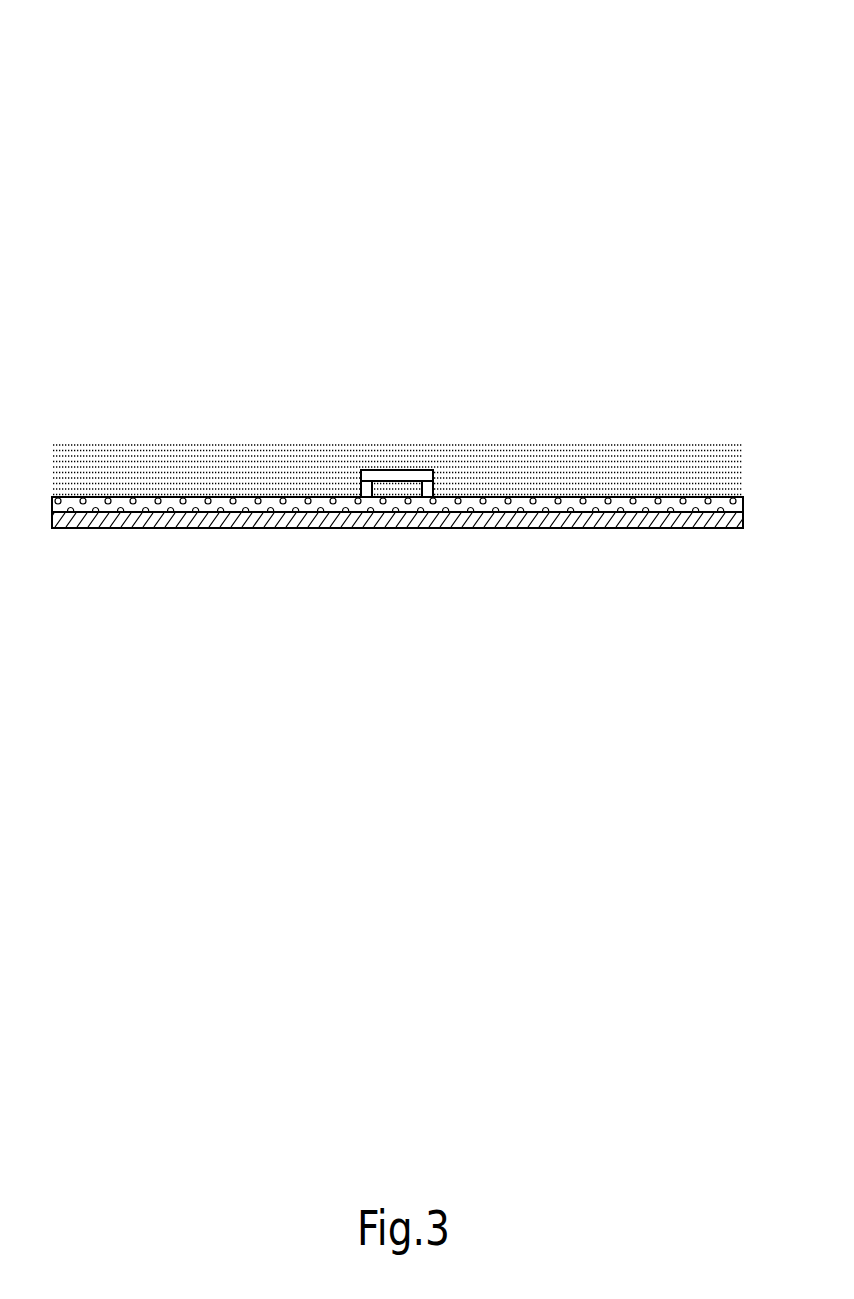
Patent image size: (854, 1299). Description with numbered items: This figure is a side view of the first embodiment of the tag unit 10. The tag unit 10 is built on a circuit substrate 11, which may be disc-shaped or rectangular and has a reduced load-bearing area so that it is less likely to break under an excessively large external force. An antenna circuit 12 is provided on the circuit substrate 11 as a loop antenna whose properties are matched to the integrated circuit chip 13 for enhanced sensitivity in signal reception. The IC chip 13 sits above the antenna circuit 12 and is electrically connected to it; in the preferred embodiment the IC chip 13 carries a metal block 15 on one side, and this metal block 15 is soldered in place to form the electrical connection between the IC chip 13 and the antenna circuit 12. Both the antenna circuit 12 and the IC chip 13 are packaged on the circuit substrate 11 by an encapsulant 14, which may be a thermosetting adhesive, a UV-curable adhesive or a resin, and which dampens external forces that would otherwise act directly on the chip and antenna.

The tag unit 10 is at (735, 31).
The circuit substrate 11 is at (520, 522).
The antenna circuit 12 is at (588, 505).
The integrated circuit (IC) chip 13 is at (398, 475).
The encapsulant 14 is at (525, 458).
The metal block 15 is at (365, 490).